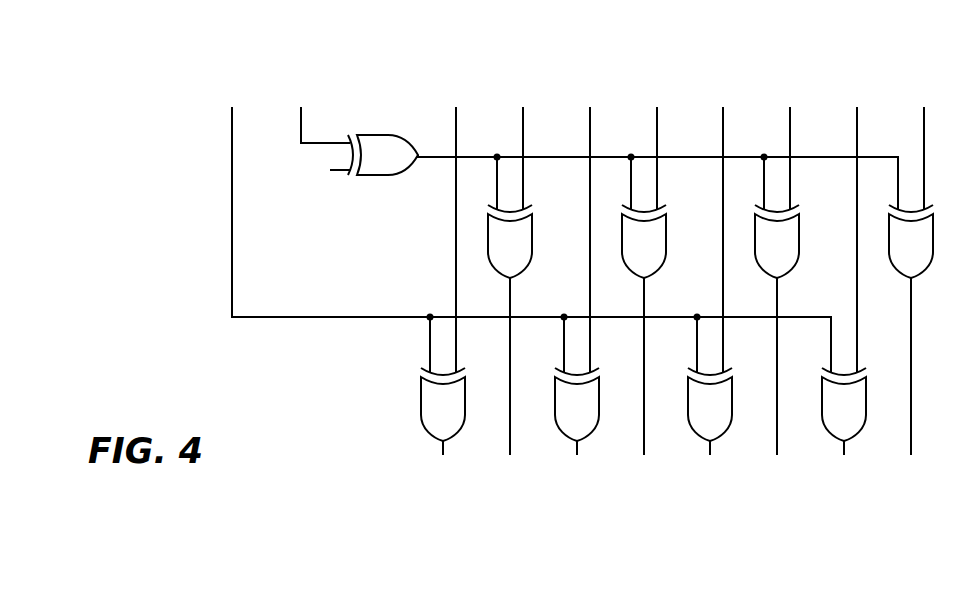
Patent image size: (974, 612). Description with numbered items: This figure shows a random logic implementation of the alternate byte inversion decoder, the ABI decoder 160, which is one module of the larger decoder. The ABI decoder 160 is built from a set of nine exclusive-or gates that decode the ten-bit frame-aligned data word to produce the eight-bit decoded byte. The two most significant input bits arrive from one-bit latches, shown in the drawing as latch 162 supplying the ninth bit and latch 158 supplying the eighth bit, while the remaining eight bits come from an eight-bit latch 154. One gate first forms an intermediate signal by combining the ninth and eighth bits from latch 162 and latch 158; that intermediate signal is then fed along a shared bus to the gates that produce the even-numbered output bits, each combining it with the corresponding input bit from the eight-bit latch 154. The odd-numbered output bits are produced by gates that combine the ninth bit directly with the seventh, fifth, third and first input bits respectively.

The ABI decoder 160 is at (318, 421).
The 1-bit latch 162 is at (490, 198).
The 1-bit latch 158 is at (342, 83).
The 8-bit latch 154 is at (690, 196).